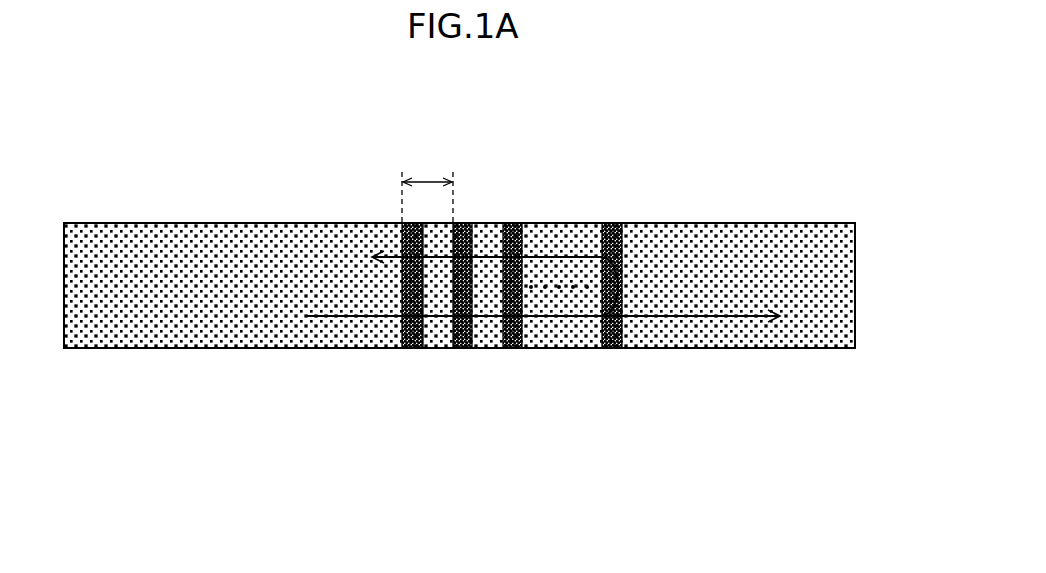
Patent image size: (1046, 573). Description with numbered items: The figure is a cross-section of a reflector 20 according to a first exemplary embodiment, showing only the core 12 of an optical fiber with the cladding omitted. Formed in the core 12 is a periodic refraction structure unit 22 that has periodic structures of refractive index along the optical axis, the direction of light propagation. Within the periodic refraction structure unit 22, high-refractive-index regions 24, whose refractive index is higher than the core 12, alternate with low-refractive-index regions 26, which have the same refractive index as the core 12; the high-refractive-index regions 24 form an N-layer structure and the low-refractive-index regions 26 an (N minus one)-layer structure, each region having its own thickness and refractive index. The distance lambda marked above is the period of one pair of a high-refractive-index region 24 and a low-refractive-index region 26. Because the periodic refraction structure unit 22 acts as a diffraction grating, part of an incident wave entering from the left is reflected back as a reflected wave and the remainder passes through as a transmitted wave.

The core 12 is at (770, 223).
The reflector 20 is at (685, 173).
The periodic refraction structure unit 22 is at (617, 140).
The high-refractive-index regions 24 is at (412, 348).
The low-refractive-index regions 26 is at (437, 348).